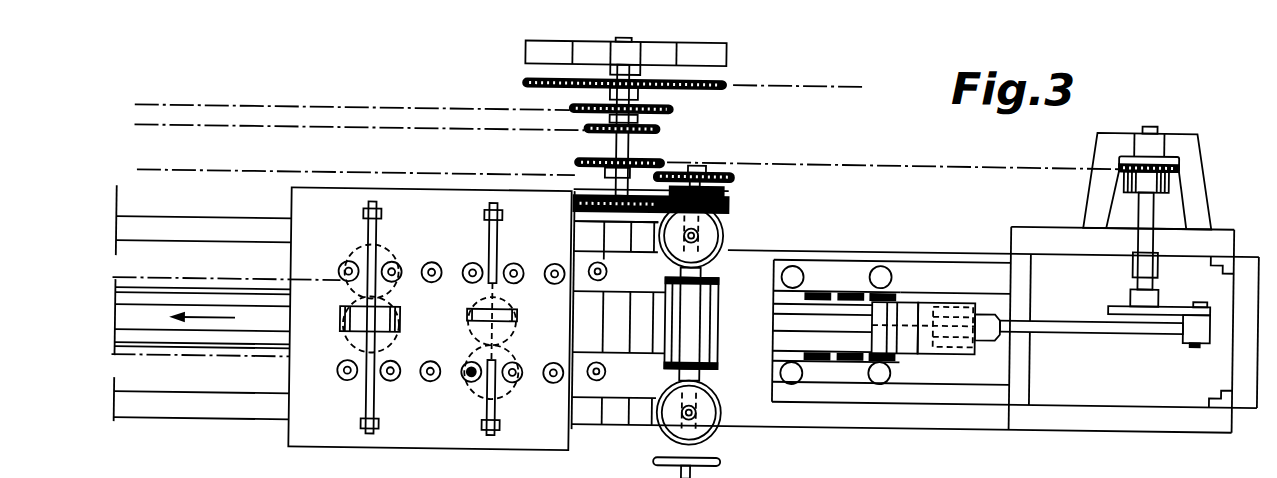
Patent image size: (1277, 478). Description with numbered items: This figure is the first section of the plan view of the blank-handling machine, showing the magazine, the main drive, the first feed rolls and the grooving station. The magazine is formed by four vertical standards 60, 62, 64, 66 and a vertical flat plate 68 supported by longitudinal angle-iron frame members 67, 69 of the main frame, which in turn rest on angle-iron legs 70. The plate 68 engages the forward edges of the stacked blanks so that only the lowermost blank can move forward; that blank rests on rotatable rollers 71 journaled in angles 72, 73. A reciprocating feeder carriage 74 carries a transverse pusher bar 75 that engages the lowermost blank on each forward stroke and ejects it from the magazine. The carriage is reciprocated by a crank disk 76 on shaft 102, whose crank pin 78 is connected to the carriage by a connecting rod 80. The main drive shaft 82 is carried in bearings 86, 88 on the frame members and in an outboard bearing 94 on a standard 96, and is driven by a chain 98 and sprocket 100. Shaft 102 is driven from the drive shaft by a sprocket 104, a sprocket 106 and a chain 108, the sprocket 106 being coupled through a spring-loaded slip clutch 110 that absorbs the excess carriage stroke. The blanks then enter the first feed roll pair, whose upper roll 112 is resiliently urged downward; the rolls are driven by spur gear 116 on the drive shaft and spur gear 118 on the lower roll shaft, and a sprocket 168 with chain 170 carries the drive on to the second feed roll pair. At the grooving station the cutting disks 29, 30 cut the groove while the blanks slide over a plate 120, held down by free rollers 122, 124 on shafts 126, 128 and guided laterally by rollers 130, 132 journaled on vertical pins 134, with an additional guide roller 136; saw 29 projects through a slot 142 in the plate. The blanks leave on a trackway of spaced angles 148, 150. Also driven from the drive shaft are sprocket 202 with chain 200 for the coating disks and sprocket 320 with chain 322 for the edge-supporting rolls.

The cutting disk 29 is at (467, 305).
The cutting disk 30 is at (343, 343).
The vertical standard 60 is at (790, 382).
The vertical standard 62 is at (880, 381).
The vertical standard 64 is at (885, 266).
The vertical standard 66 is at (795, 266).
The longitudinal angle-iron frame member 67 is at (210, 231).
The vertical flat plate 68 is at (743, 466).
The longitudinal angle-iron frame member 69 is at (191, 416).
The angle-iron leg 70 is at (1220, 258).
The rotatable roller 71 is at (825, 290).
The angle 72 is at (975, 385).
The angle 73 is at (950, 272).
The reciprocating feeder carriage 74 is at (935, 345).
The transverse pusher bar 75 is at (908, 345).
The crank disk 76 is at (1115, 300).
The crank pin 78 is at (1195, 340).
The connecting rod 80 is at (1080, 327).
The main drive shaft 82 is at (628, 150).
The bearing 86 is at (625, 240).
The bearing 88 is at (617, 420).
The bearing 94 is at (625, 51).
The standard 96 is at (713, 57).
The chain 98 is at (795, 84).
The sprocket 100 is at (520, 84).
The shaft 102 is at (1143, 235).
The sprocket 104 is at (575, 163).
The sprocket 106 is at (1170, 160).
The chain 108 is at (908, 162).
The spring-loaded slip clutch 110 is at (1168, 175).
The upper feed roll 112 is at (665, 325).
The spur gear 116 is at (607, 204).
The spur gear 118 is at (727, 208).
The plate 120 is at (330, 446).
The free roller 122 is at (340, 322).
The free roller 124 is at (520, 330).
The shaft 126 is at (367, 235).
The shaft 128 is at (496, 243).
The roller 130 is at (470, 383).
The roller 132 is at (468, 266).
The vertical pin 134 is at (395, 370).
The roller 136 is at (513, 372).
The slot 142 is at (467, 318).
The angle 148 is at (178, 294).
The angle 150 is at (172, 353).
The sprocket 168 is at (712, 172).
The chain 170 is at (440, 176).
The chain 200 is at (255, 133).
The sprocket 202 is at (659, 129).
The sprocket 320 is at (672, 109).
The chain 322 is at (372, 111).